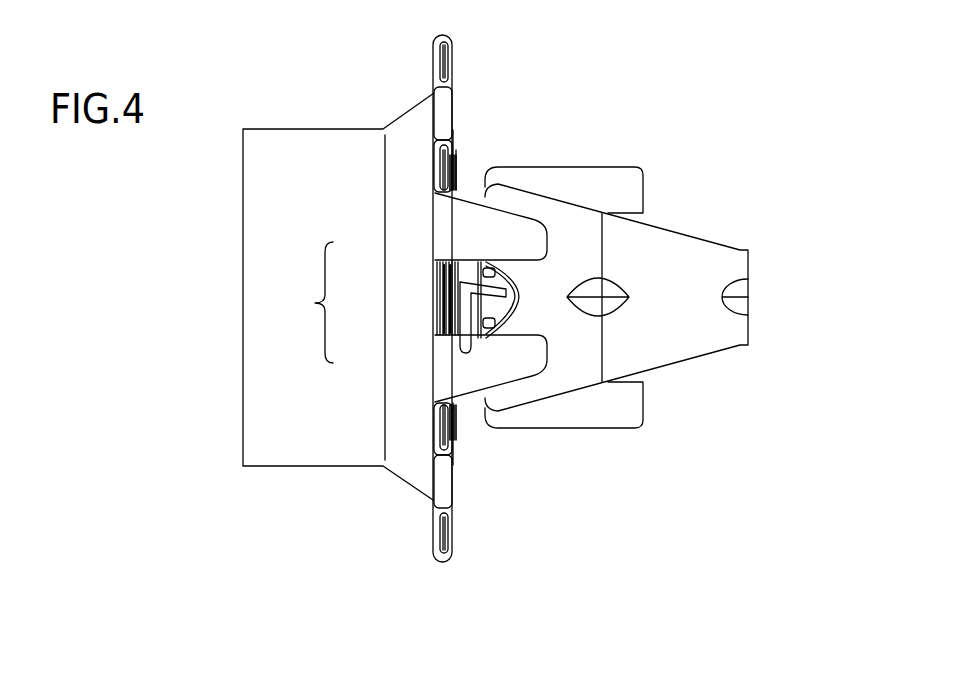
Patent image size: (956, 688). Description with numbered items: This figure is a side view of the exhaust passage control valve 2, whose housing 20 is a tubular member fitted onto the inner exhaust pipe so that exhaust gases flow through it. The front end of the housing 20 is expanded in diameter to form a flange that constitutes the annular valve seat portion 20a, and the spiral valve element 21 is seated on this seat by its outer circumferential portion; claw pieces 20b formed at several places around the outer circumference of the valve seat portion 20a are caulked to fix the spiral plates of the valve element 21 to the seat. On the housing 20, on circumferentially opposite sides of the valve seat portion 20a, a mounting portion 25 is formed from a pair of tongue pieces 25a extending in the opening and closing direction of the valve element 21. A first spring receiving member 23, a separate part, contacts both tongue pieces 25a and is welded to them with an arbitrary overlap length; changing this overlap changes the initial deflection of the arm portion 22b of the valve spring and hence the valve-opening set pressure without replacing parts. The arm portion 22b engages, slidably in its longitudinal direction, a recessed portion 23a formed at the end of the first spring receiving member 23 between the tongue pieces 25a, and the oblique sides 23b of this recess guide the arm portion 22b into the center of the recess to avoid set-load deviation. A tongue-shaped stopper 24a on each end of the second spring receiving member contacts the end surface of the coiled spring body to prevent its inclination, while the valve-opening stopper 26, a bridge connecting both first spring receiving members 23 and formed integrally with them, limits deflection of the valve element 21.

The exhaust passage control valve 2 is at (633, 89).
The housing 20 is at (273, 153).
The valve seat portion 20a is at (433, 415).
The claw pieces 20b is at (452, 57).
The valve element 21 is at (457, 167).
The arm portion 22b is at (470, 355).
The first spring receiving member 23 is at (553, 390).
The recessed portion 23a is at (513, 316).
The oblique sides 23b is at (487, 260).
The stopper 24a is at (628, 192).
The mounting portion 25 is at (310, 302).
The tongue pieces 25a is at (455, 231).
The valve-opening stopper 26 is at (745, 268).